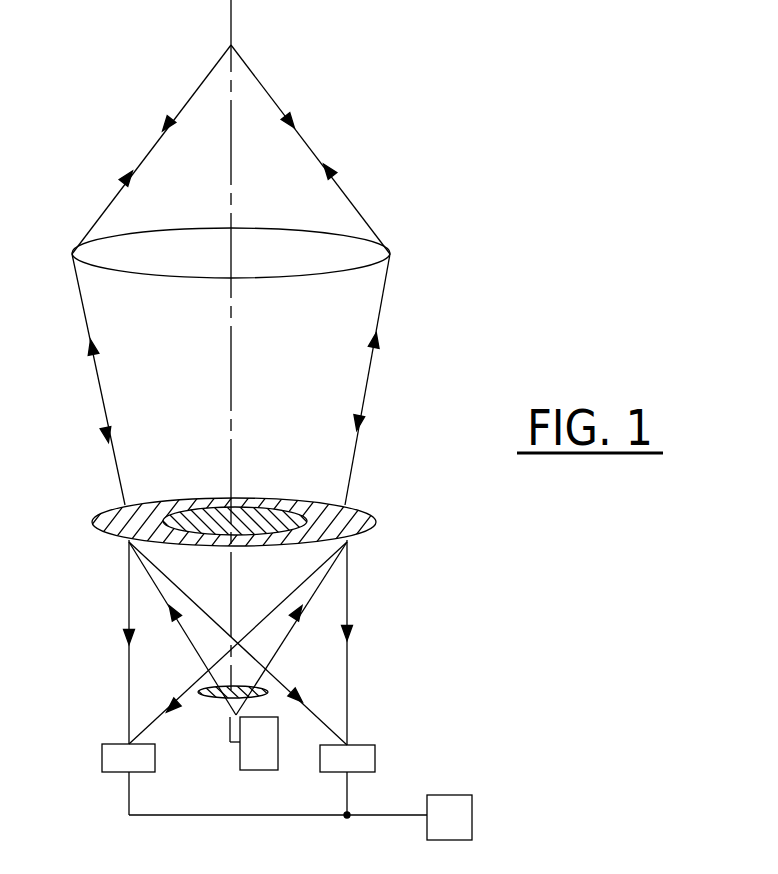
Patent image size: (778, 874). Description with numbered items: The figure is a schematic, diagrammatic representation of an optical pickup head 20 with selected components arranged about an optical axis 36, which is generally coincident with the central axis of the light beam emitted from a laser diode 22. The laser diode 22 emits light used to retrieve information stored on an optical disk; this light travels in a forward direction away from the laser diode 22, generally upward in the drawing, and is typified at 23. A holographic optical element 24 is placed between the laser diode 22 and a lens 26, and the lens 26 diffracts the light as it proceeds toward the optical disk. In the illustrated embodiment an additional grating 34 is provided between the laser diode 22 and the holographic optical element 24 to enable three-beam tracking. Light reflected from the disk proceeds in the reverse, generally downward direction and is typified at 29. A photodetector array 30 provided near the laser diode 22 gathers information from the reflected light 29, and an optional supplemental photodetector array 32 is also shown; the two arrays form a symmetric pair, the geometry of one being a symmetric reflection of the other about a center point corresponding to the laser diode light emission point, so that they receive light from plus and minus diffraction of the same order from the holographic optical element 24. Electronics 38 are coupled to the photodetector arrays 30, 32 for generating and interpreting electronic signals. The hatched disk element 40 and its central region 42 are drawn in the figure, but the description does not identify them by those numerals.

The pickup head 20 is at (460, 194).
The laser diode 22 is at (230, 742).
The light proceeding in the forward direction 23 is at (285, 645).
The holographic optical element 24 is at (293, 498).
The lens 26 is at (343, 277).
The reflected light 29 is at (129, 604).
The photodetector array 30 is at (107, 773).
The supplemental photodetector array 32 is at (373, 745).
The grating 34 is at (213, 698).
The optical axis 36 is at (231, 165).
The electronics 38 is at (460, 795).
The filter disk 40 is at (237, 492).
The central filter region 42 is at (193, 515).